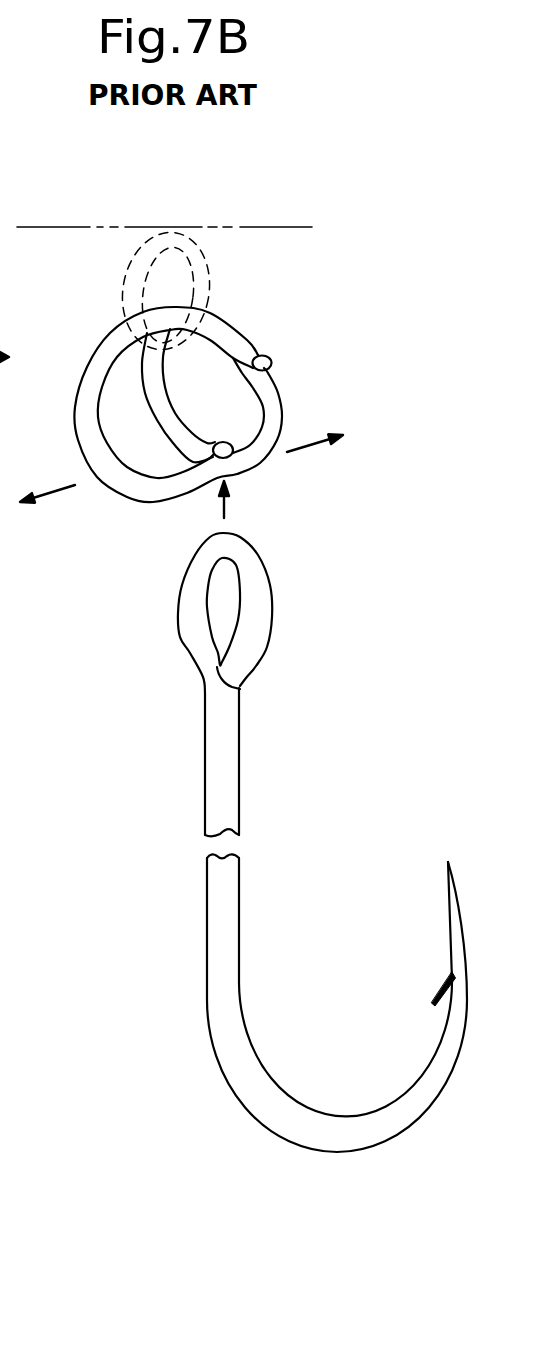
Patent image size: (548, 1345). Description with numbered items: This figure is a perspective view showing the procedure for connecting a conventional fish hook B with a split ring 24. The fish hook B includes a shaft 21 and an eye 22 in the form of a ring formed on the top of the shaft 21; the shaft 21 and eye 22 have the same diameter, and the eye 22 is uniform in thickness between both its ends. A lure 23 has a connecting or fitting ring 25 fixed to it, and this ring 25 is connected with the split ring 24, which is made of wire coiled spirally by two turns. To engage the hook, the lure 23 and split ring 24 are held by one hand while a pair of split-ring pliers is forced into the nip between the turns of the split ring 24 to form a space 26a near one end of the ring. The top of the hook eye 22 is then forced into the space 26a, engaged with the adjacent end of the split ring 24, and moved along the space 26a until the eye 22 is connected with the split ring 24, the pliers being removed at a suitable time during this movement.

The shaft 21 is at (227, 737).
The eye 22 is at (257, 582).
The lure 23 is at (88, 203).
The split ring 24 is at (235, 360).
The connecting ring 25 is at (137, 285).
The space 26a is at (233, 423).
The fish hook B is at (282, 842).